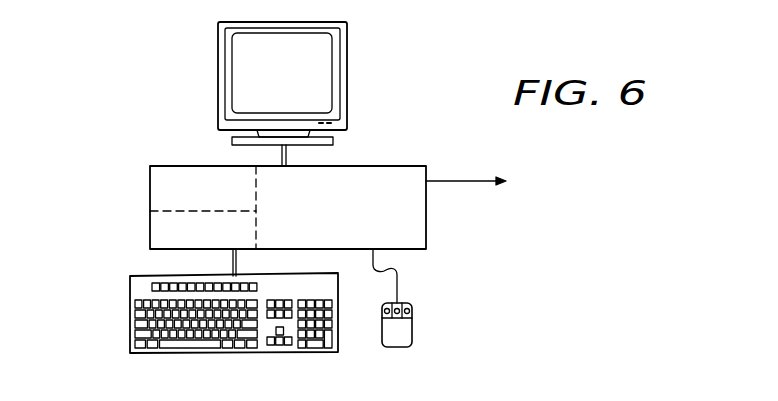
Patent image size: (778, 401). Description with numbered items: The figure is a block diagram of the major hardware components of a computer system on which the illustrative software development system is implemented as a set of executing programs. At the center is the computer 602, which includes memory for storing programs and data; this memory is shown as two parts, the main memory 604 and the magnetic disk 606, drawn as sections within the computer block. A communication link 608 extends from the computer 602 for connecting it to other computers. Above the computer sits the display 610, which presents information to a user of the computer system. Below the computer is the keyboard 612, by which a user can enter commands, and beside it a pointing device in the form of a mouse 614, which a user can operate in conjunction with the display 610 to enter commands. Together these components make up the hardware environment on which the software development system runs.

The computer 602 is at (426, 217).
The main memory 604 is at (150, 190).
The magnetic disk 606 is at (150, 232).
The communication link 608 is at (465, 178).
The display 610 is at (347, 77).
The keyboard 612 is at (130, 316).
The mouse 614 is at (412, 322).